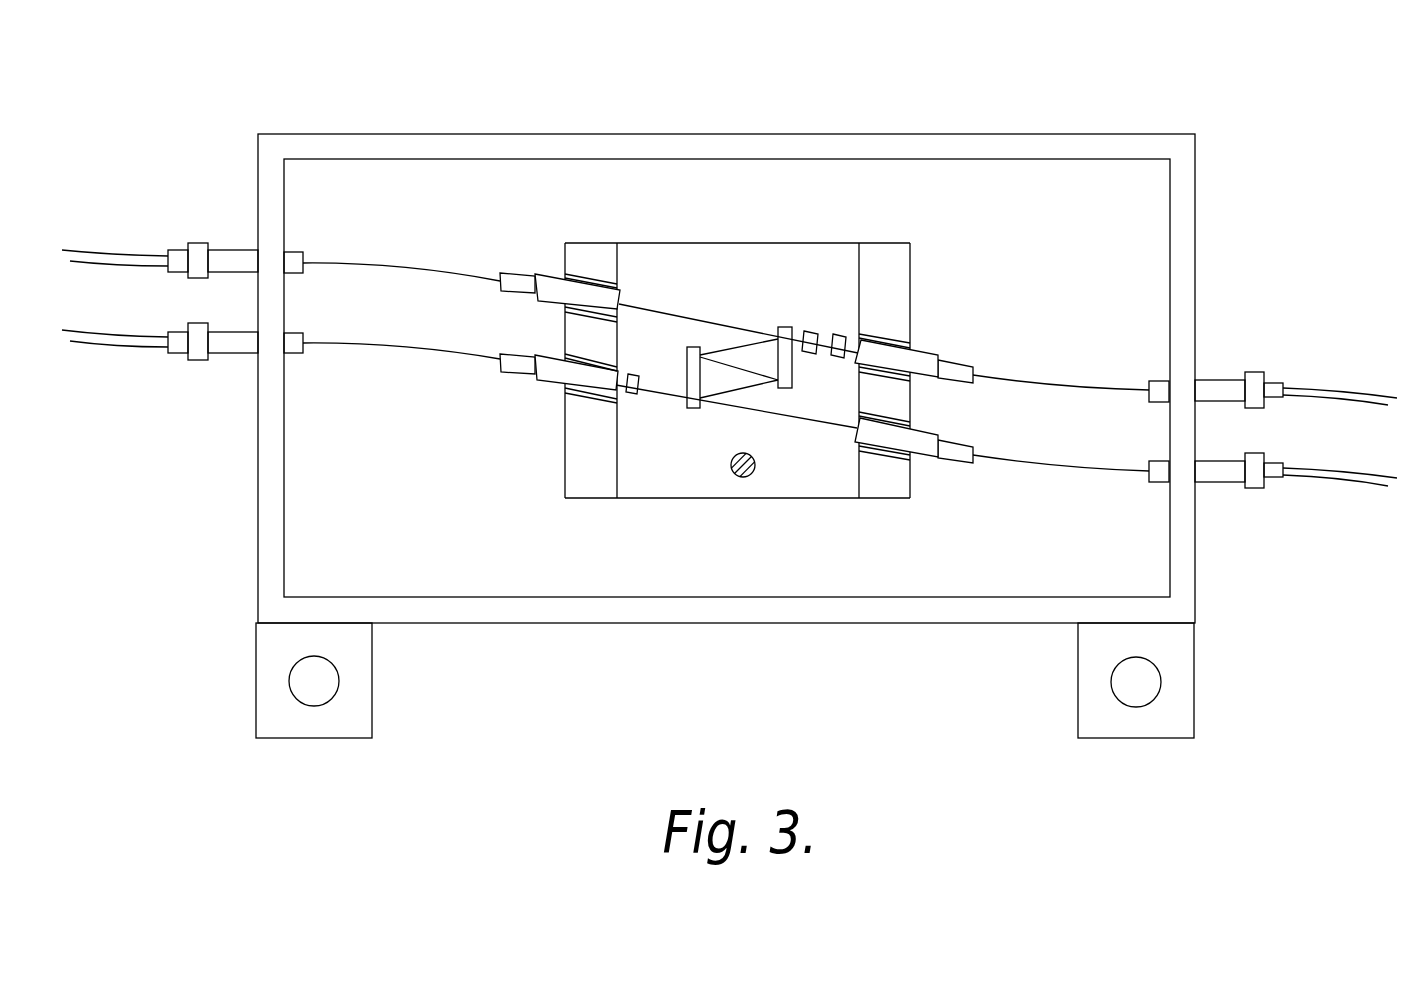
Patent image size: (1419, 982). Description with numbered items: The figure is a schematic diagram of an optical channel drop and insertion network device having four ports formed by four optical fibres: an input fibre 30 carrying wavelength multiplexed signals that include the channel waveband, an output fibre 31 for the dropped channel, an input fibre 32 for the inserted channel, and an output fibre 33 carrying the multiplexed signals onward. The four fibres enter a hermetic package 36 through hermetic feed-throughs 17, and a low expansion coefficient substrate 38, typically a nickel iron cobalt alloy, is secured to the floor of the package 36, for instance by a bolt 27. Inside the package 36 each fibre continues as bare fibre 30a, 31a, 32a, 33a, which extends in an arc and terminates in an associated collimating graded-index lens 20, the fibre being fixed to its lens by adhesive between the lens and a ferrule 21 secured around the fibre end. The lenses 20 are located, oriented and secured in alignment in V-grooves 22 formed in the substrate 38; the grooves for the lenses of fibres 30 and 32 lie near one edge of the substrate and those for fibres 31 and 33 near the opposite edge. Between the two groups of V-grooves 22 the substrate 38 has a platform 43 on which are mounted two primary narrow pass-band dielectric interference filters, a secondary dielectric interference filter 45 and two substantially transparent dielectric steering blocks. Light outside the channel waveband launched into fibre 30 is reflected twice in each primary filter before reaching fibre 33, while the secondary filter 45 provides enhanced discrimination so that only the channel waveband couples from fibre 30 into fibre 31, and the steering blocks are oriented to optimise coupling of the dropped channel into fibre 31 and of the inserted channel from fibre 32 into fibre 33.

The hermetic feed-through 17 is at (232, 340).
The collimating graded-index lens 20 is at (580, 378).
The ferrule 21 is at (518, 363).
The V-groove 22 is at (592, 286).
The bolt 27 is at (740, 477).
The input fibre 30 is at (112, 257).
The bare fibre 30a is at (377, 263).
The output fibre 31 is at (1318, 392).
The bare fibre 31a is at (1060, 392).
The input fibre 32 is at (115, 343).
The bare fibre 32a is at (412, 348).
The output fibre 33 is at (1360, 478).
The bare fibre 33a is at (1095, 470).
The hermetic package 36 is at (1033, 622).
The substrate 38 is at (728, 243).
The platform 43 is at (692, 477).
The secondary dielectric interference filter 45 is at (810, 352).